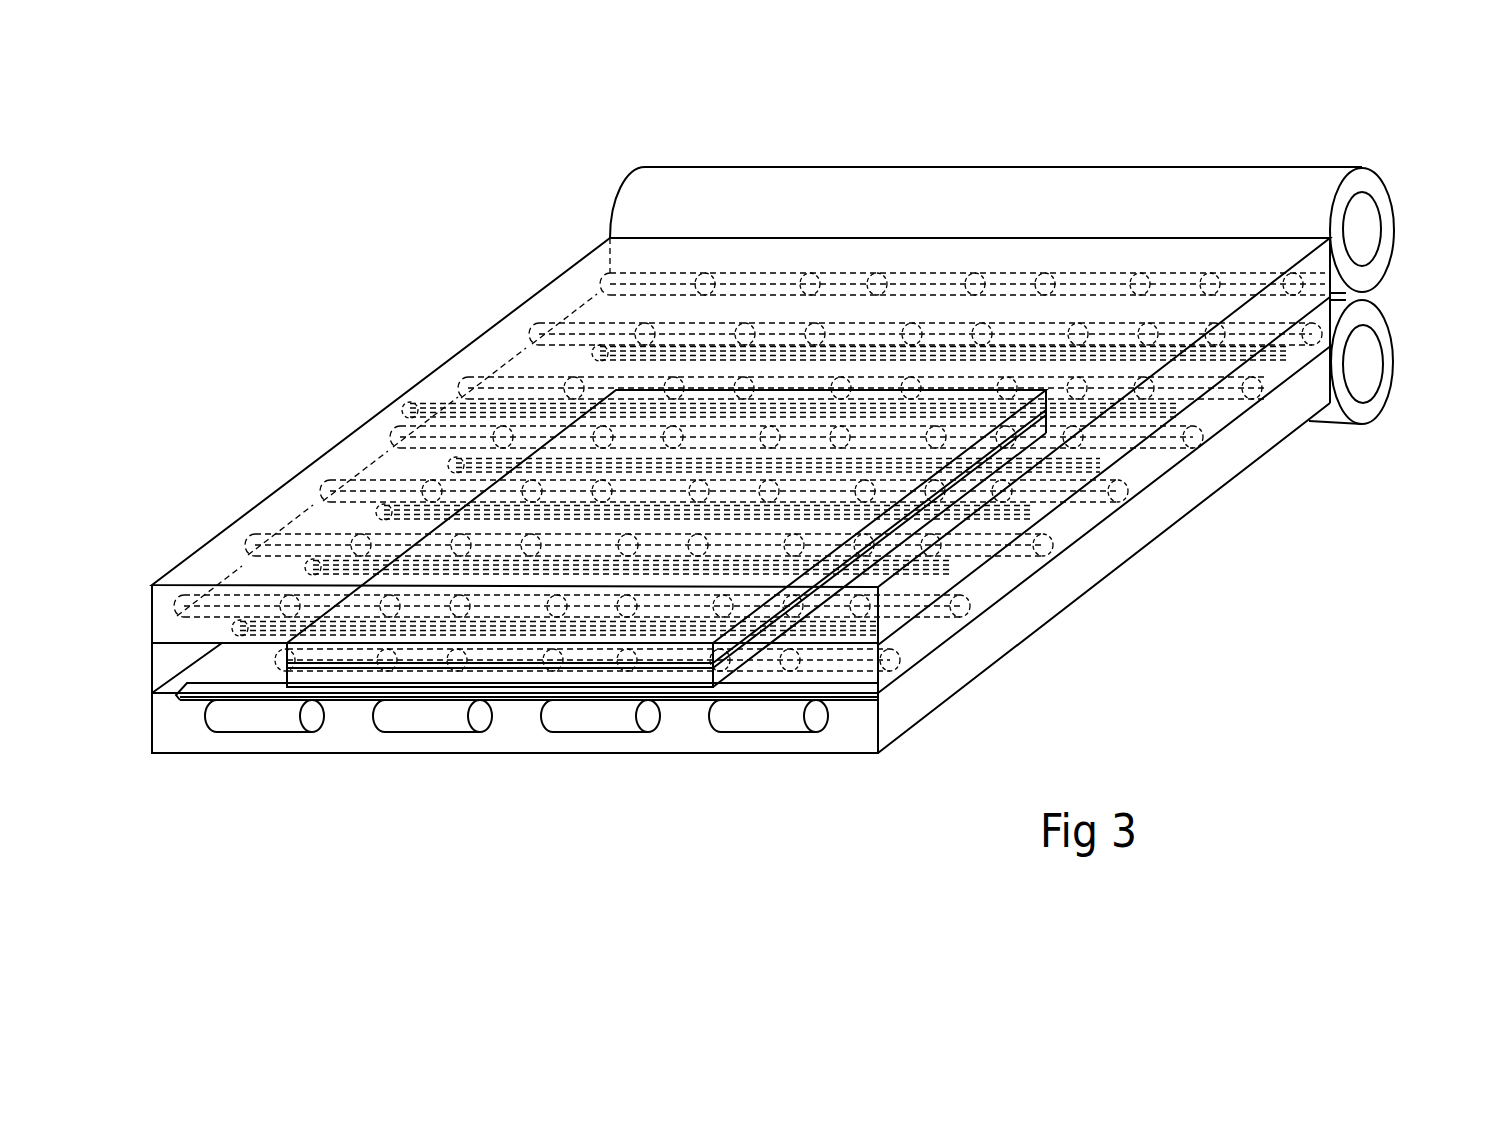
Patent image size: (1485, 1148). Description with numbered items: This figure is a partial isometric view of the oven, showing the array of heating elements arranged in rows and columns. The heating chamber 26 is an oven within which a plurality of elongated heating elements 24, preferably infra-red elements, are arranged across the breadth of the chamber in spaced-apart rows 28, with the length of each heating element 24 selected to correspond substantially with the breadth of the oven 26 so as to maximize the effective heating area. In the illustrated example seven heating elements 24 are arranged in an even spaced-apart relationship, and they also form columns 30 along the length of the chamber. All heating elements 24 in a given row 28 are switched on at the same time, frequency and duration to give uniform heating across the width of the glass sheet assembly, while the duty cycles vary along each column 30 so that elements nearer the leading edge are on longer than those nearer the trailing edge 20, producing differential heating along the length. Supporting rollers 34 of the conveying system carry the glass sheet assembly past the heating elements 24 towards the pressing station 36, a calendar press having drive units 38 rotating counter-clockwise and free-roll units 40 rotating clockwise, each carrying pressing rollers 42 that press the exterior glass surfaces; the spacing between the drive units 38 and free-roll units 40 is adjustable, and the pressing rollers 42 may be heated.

The trailing edge 20 is at (1022, 573).
The heating element 24 is at (1097, 520).
The heating chamber 26 is at (340, 384).
The row 28 is at (884, 689).
The column 30 is at (183, 704).
The supporting roller 34 is at (1118, 493).
The pressing station 36 is at (1420, 224).
The drive unit 38 is at (1378, 200).
The free-roll unit 40 is at (1383, 365).
The pressing roller 42 is at (1362, 168).